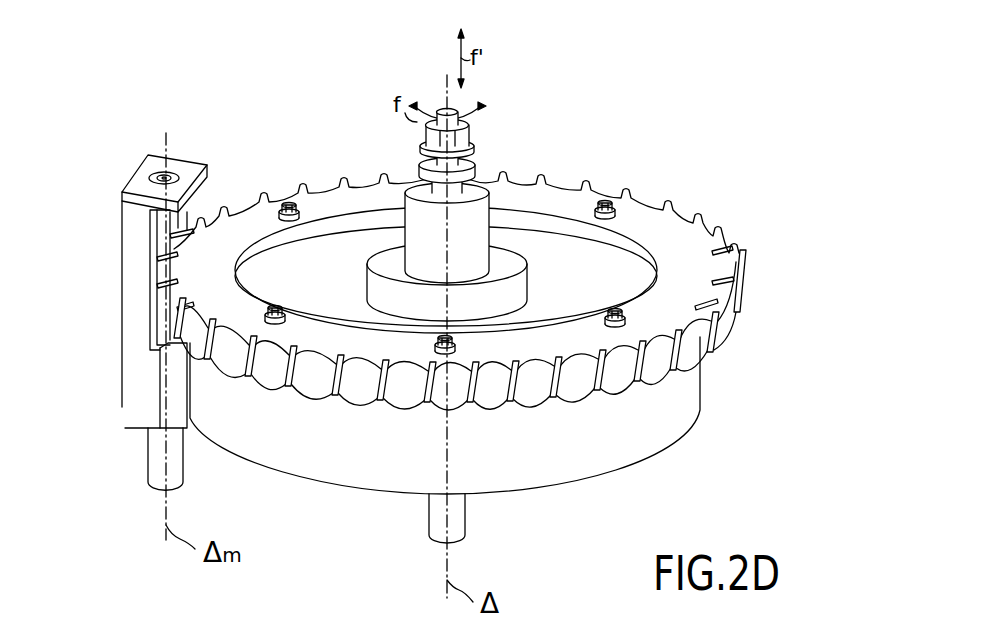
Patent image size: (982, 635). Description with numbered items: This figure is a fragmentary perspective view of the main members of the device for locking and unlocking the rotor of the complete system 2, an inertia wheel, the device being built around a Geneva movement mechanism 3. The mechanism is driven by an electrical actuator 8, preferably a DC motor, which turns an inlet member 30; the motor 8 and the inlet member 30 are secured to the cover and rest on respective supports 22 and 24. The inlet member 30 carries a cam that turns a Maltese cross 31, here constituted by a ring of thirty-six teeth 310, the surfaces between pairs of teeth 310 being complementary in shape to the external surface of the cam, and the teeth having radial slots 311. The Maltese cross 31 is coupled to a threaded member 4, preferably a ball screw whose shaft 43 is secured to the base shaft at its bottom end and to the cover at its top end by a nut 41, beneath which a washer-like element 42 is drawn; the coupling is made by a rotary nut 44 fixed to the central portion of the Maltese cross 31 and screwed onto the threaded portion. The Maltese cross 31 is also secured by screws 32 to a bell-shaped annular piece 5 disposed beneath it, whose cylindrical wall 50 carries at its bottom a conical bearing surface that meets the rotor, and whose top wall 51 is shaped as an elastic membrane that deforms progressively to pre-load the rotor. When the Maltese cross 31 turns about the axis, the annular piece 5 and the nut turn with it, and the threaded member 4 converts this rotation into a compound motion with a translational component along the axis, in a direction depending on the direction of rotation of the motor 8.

The complete system 2 is at (776, 166).
The Geneva movement mechanism 3 is at (152, 230).
The threaded member 4 is at (473, 248).
The annular piece 5 is at (703, 409).
The electrical actuator 8 is at (160, 385).
The support 22 is at (138, 360).
The support 24 is at (142, 186).
The inlet member 30 is at (192, 202).
The Maltese cross 31 is at (667, 243).
The screws 32 is at (604, 207).
The nut 41 is at (465, 138).
The washer 42 is at (477, 166).
The shaft 43 is at (455, 515).
The rotary nut 44 is at (420, 228).
The cylindrical wall 50 is at (637, 420).
The top wall 51 is at (320, 262).
The teeth 310 is at (723, 236).
The radial slots 311 is at (739, 280).